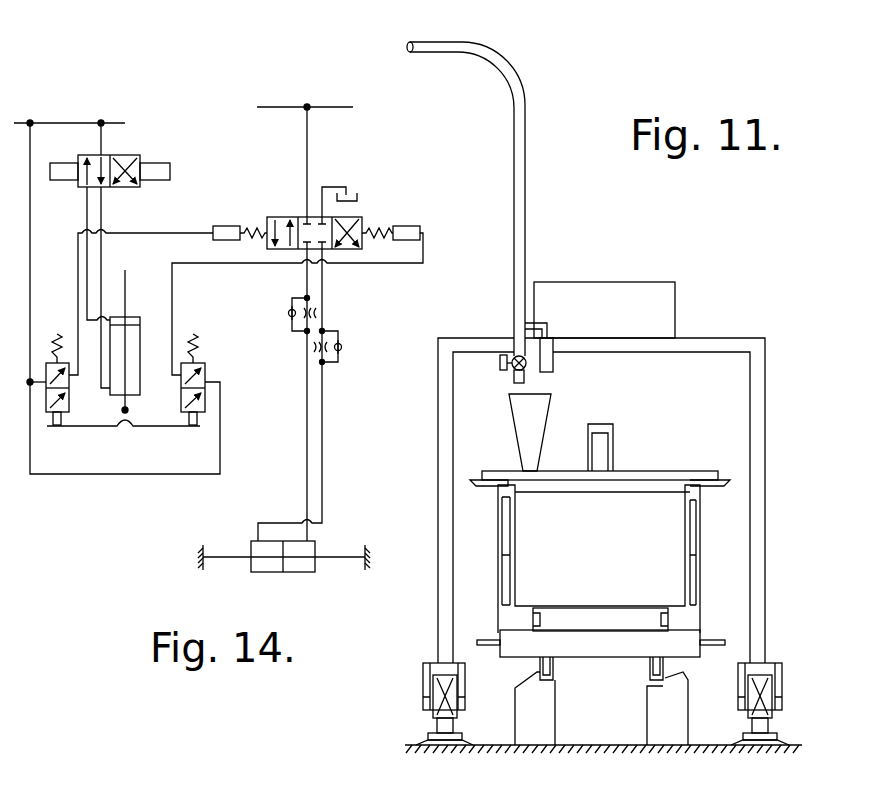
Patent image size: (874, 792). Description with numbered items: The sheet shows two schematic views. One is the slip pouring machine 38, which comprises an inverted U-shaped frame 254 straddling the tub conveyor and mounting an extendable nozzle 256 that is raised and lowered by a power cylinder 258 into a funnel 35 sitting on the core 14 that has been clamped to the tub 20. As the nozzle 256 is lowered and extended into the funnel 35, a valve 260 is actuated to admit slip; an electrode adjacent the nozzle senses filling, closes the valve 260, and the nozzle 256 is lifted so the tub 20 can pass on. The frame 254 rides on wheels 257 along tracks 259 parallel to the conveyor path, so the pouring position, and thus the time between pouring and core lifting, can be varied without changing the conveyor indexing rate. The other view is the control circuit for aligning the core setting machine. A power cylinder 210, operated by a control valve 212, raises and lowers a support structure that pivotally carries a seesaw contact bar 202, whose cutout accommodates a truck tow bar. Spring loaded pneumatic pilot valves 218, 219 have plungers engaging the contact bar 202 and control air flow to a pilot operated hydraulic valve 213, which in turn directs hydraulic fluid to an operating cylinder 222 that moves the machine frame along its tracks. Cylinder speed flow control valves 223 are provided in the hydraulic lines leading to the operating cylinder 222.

In FIG. 14, the control valve 212 is at (122, 160).
In FIG. 14, the pilot operated hydraulic valve 213 is at (298, 217).
In FIG. 14, the power cylinder 210 is at (150, 311).
In FIG. 14, the spring loaded pneumatic pilot valve 218 is at (69, 388).
In FIG. 14, the spring loaded pneumatic pilot valve 219 is at (181, 388).
In FIG. 14, the contact bar 202 is at (95, 428).
In FIG. 14, the cylinder speed flow control valve 223 is at (290, 318).
In FIG. 14, the operating cylinder 222 is at (287, 573).
In FIG. 11, the pouring machine 38 is at (668, 256).
In FIG. 11, the inverted U-shaped frame 254 is at (767, 467).
In FIG. 11, the power cylinder 258 is at (554, 366).
In FIG. 11, the valve 260 is at (511, 368).
In FIG. 11, the extendable nozzle 256 is at (511, 381).
In FIG. 11, the funnel 35 is at (519, 443).
In FIG. 11, the core 14 is at (652, 484).
In FIG. 11, the tub 20 is at (687, 545).
In FIG. 11, the wheels 257 is at (432, 714).
In FIG. 11, the tracks 259 is at (428, 727).